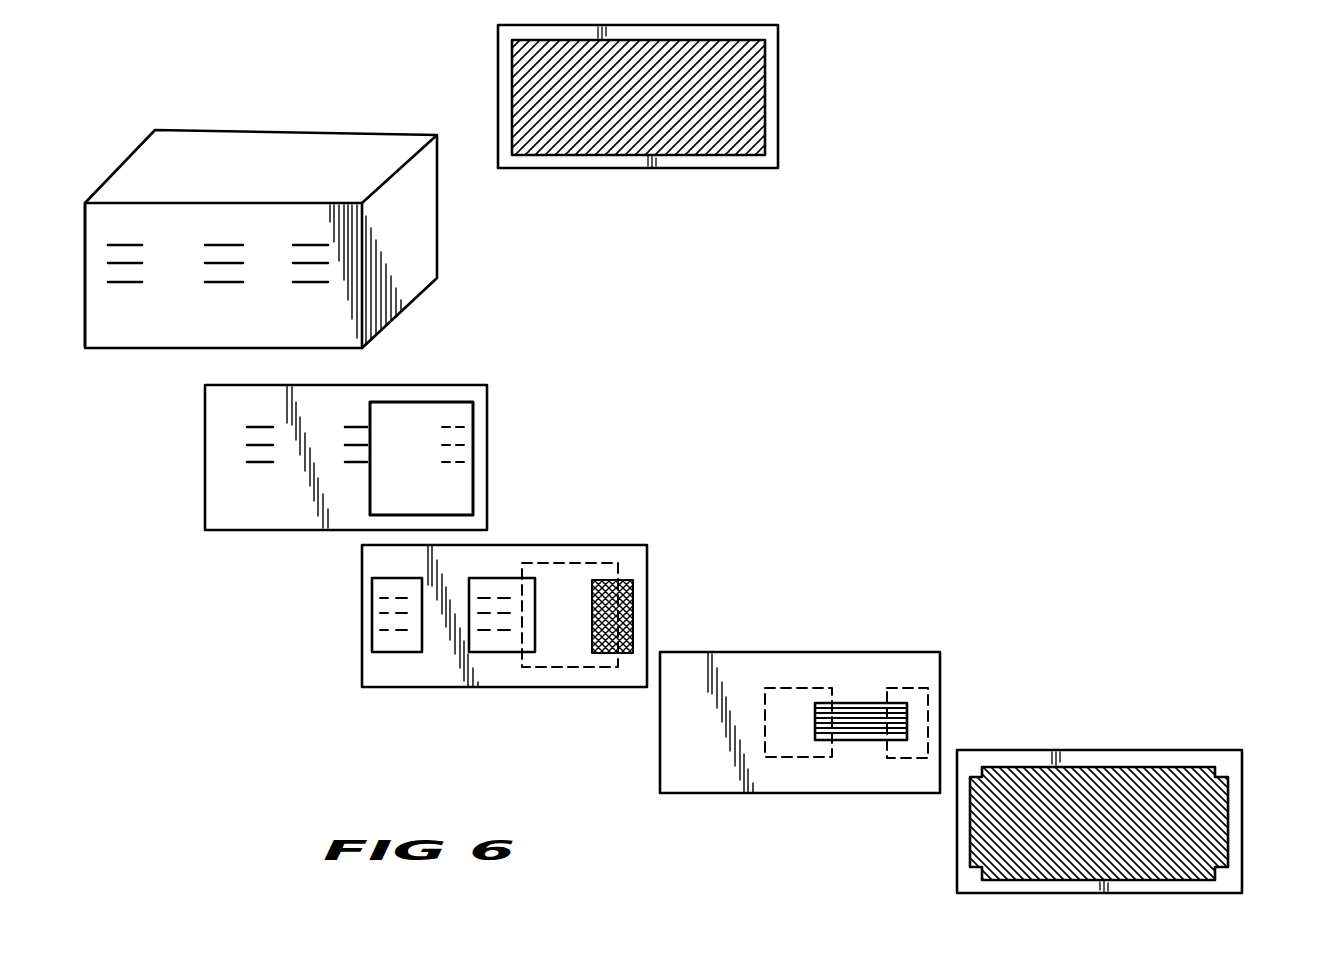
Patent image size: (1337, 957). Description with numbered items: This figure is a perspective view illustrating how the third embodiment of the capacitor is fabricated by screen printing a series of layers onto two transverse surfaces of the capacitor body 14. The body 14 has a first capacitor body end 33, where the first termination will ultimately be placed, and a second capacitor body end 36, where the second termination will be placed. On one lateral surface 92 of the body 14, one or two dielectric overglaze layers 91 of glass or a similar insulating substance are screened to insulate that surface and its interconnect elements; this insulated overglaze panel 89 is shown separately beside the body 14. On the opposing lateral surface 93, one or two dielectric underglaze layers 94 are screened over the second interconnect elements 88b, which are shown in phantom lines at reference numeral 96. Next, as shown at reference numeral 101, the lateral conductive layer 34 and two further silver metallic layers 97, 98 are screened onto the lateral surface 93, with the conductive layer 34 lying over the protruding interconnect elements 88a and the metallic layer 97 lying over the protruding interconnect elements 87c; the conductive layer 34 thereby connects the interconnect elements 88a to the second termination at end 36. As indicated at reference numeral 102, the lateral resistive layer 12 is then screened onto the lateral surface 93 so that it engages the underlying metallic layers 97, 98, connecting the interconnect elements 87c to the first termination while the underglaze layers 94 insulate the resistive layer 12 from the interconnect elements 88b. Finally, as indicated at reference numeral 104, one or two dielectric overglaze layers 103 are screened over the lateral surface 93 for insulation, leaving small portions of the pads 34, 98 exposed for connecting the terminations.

The lateral resistive layer 12 is at (857, 710).
The capacitor body 14 is at (138, 173).
The capacitor body end 33 is at (463, 222).
The lateral conductive layer 34 is at (400, 640).
The capacitor body end 36 is at (92, 178).
The protruding interconnect elements 87c is at (215, 288).
The protruding interconnect elements 88a is at (127, 288).
The second interconnect elements 88b is at (316, 290).
The heat sink plate 89 is at (793, 73).
The dielectric overglaze layers 91 is at (762, 108).
The lateral surface 92 is at (262, 118).
The lateral surface 93 is at (105, 222).
The dielectric underglaze layers 94 is at (462, 417).
The phantom lines showing second interconnect elements 96 is at (494, 508).
The metallic layer 97 is at (494, 640).
The metallic layer 98 is at (623, 590).
The view showing conductive and metallic layers 101 is at (355, 602).
The view showing lateral resistive layer 102 is at (947, 712).
The dielectric overglaze layers 103 is at (1140, 785).
The view showing overglaze layers 104 is at (1248, 808).